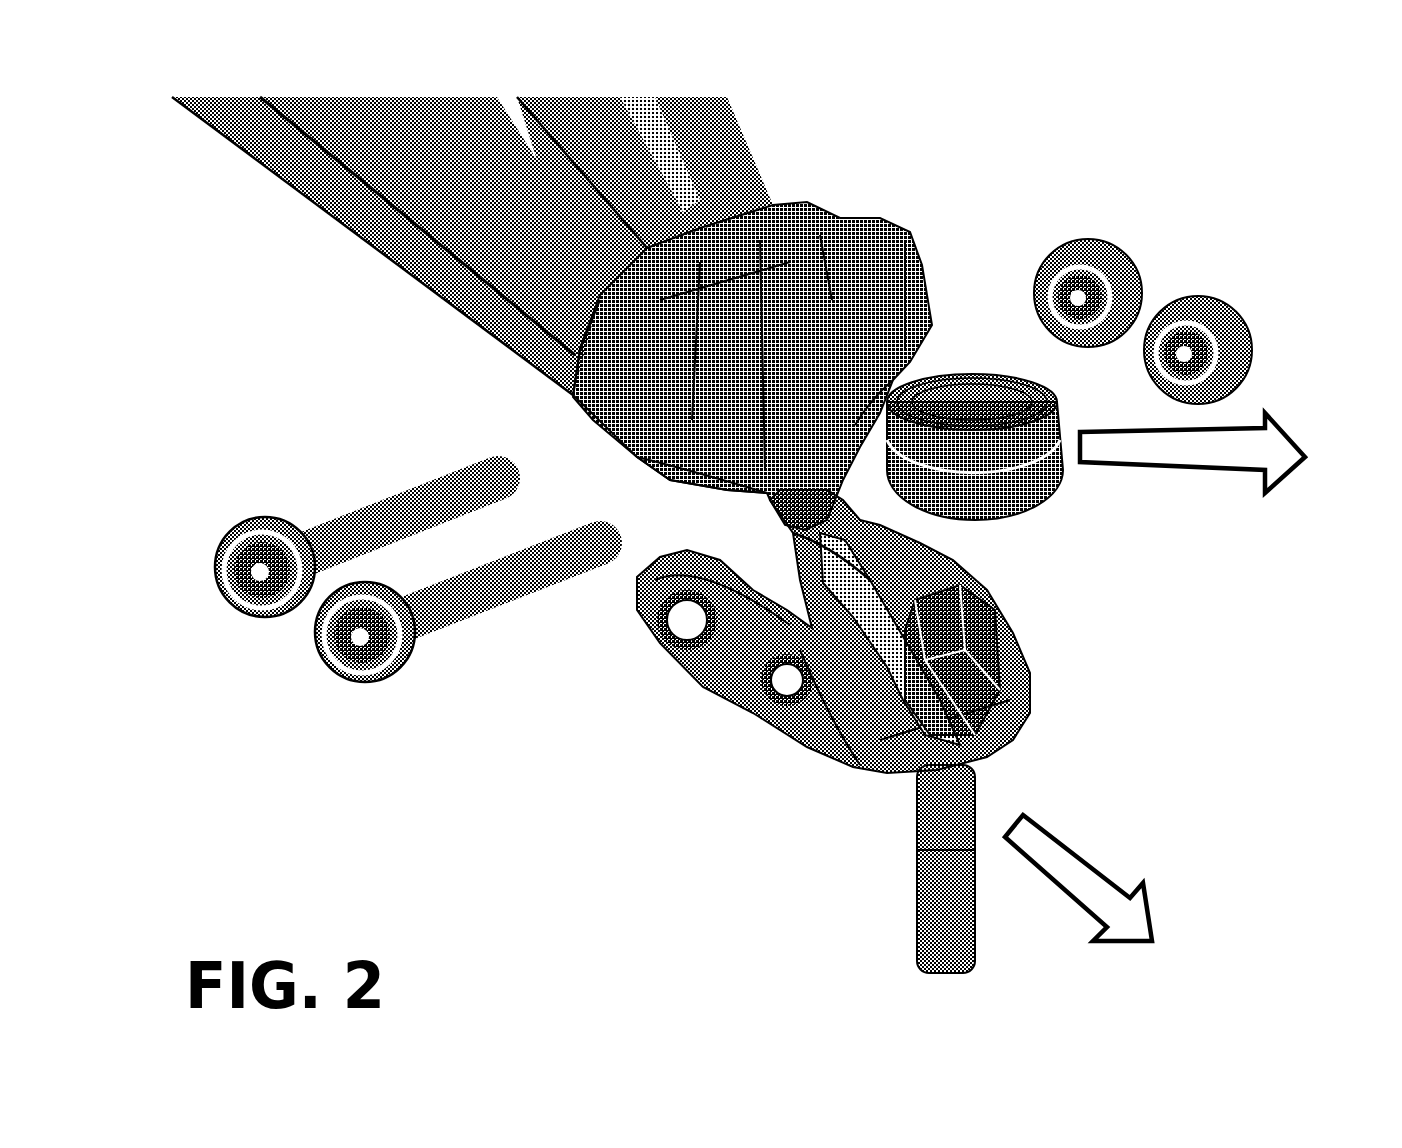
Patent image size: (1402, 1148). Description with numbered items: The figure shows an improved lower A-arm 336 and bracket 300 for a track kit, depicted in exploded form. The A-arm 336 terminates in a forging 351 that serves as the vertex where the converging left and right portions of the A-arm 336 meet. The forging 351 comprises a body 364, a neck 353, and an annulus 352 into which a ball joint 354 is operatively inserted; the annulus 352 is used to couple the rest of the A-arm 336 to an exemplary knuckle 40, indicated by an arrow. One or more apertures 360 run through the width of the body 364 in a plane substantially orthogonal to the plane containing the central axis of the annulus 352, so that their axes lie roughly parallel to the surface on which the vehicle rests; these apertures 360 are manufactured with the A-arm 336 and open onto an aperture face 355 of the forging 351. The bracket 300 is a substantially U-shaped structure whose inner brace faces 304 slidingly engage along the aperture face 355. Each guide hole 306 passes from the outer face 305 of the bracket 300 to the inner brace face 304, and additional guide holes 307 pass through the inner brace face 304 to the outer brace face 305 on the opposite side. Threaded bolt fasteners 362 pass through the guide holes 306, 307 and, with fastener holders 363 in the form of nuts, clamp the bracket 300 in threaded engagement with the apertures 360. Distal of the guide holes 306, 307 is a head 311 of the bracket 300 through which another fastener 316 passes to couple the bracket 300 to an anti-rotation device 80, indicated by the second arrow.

The knuckle 40 is at (1231, 453).
The anti-rotation device 80 is at (1106, 906).
The bracket 300 is at (906, 731).
The inner brace face 304 is at (890, 639).
The outer face 305 is at (700, 638).
The guide hole 306 is at (788, 682).
The guide hole 307 is at (825, 555).
The head 311 is at (1050, 720).
The fastener 316 is at (885, 846).
The lower A-arm 336 is at (262, 208).
The forging 351 is at (1103, 343).
The annulus 352 is at (1080, 491).
The neck 353 is at (835, 393).
The ball joint 354 is at (1038, 364).
The aperture face 355 is at (733, 452).
The aperture 360 is at (768, 503).
The threaded bolt fastener 362 is at (292, 668).
The fastener holder 363 is at (1170, 232).
The body 364 is at (810, 302).